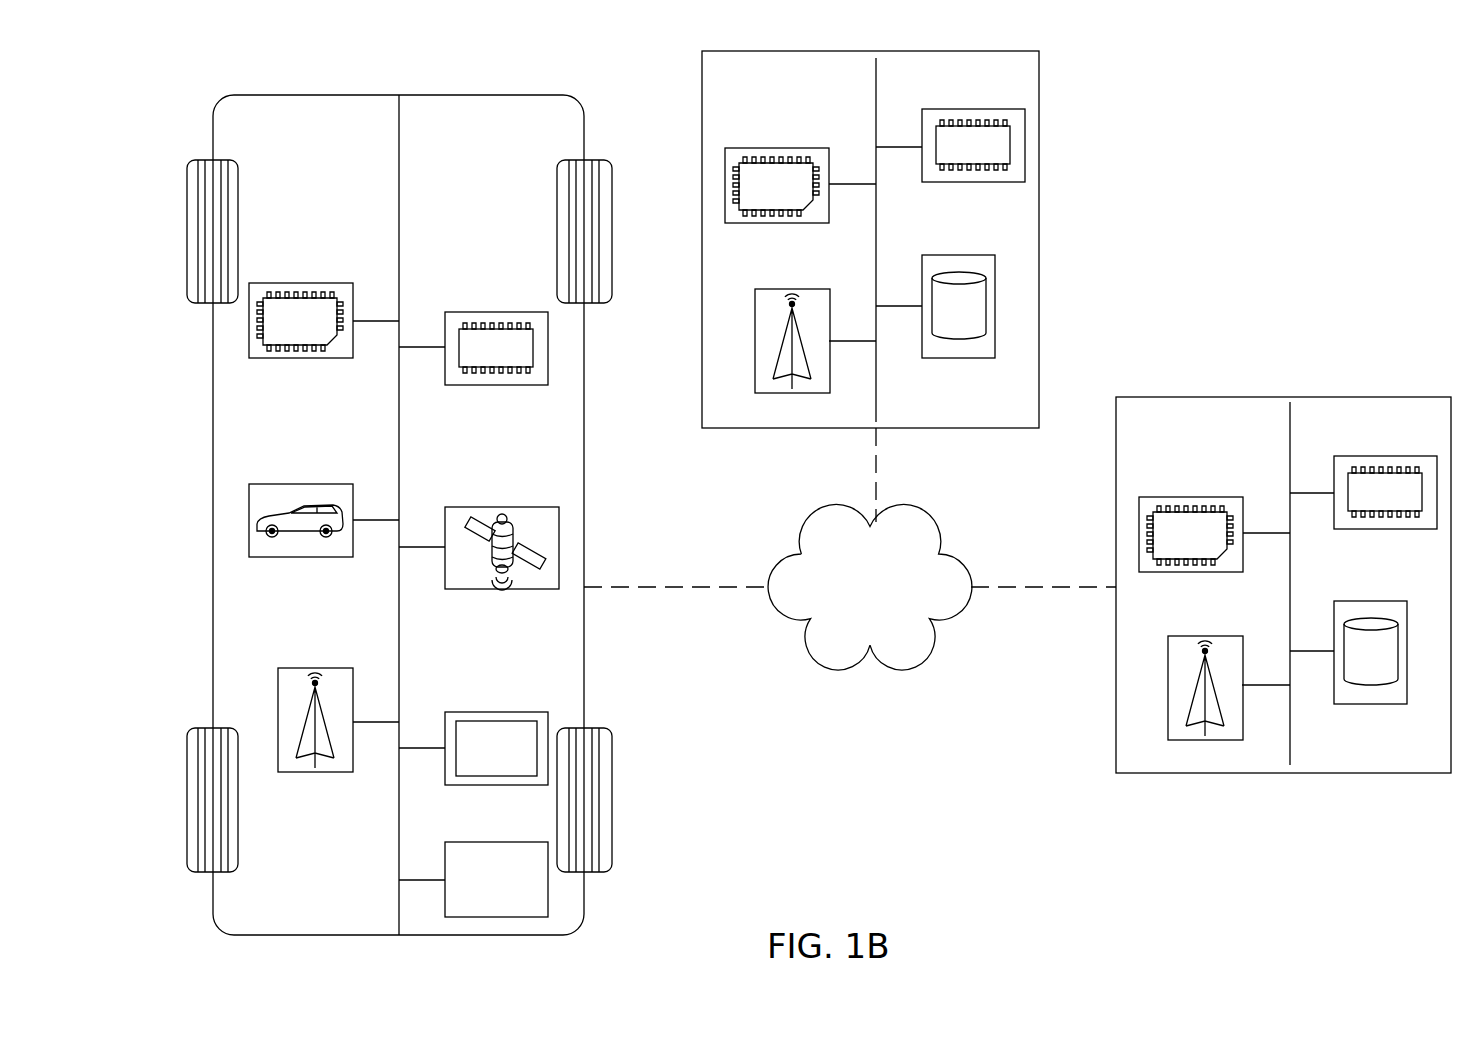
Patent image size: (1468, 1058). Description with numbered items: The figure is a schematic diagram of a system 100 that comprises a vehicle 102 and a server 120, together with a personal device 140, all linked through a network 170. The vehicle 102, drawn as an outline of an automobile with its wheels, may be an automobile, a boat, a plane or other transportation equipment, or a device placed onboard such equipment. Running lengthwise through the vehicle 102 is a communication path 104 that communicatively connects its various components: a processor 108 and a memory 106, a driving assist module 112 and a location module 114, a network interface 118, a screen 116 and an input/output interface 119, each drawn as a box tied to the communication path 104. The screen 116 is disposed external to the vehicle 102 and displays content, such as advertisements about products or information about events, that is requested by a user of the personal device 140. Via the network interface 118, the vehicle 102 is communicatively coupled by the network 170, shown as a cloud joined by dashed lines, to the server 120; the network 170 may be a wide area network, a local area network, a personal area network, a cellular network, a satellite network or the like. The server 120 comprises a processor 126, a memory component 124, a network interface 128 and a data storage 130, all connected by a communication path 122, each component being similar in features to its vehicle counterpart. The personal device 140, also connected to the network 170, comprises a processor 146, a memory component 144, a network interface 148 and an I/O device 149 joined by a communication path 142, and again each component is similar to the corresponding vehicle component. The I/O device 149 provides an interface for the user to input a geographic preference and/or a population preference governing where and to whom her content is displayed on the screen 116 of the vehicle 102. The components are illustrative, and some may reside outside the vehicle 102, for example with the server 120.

The system 100 is at (140, 138).
The vehicle 102 is at (543, 95).
The communication path 104 is at (399, 223).
The memory 106 is at (495, 312).
The processor 108 is at (298, 283).
The driving assist module 112 is at (298, 484).
The location module 114 is at (500, 507).
The screen 116 is at (495, 712).
The network interface 118 is at (316, 668).
The input/output interface 119 is at (495, 842).
The server 120 is at (1225, 397).
The communication path 122 is at (1290, 743).
The memory component 124 is at (1385, 456).
The processor 126 is at (1192, 497).
The network interface 128 is at (1206, 636).
The data storage 130 is at (1371, 601).
The personal device 140 is at (1039, 105).
The communication path 142 is at (876, 398).
The memory component 144 is at (973, 109).
The processor 146 is at (778, 148).
The network interface 148 is at (792, 289).
The I/O device 149 is at (960, 255).
The network 170 is at (937, 535).